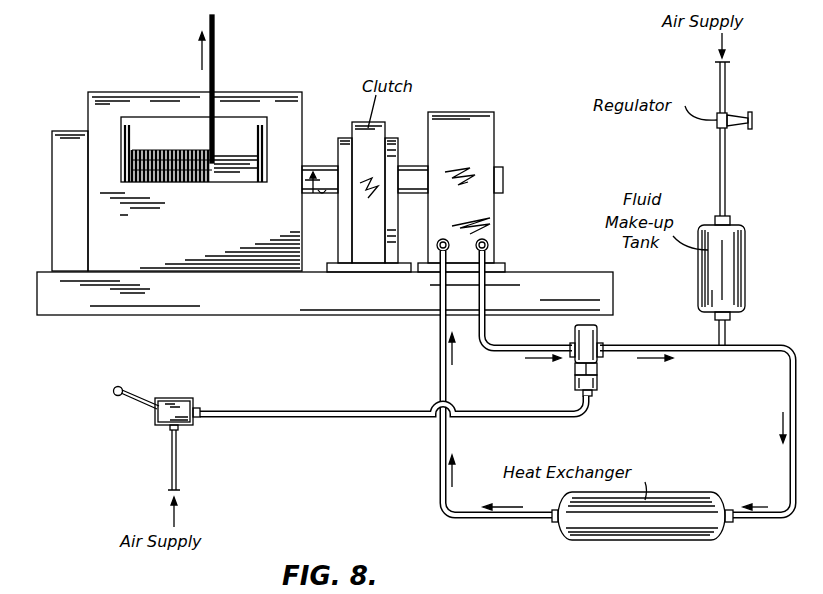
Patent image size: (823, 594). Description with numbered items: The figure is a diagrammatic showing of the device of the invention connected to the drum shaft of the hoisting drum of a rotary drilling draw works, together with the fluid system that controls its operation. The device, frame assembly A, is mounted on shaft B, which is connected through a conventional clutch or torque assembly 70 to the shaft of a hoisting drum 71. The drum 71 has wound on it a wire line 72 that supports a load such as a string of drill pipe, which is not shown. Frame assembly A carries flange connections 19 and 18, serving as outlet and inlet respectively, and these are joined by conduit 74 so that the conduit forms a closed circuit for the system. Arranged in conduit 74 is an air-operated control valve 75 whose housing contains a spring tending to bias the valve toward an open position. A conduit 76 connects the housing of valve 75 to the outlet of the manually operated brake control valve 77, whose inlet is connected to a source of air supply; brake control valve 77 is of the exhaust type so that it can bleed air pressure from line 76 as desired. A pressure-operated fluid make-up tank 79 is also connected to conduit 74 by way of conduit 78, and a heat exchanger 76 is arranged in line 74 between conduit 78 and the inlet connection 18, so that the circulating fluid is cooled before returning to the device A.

The flange connection 18 is at (437, 243).
The flange connection 19 is at (488, 243).
The clutch assembly 70 is at (357, 136).
The hoisting drum 71 is at (238, 174).
The wire line 72 is at (215, 72).
The conduit 74 is at (439, 357).
The air-operated control valve 75 is at (598, 355).
The heat exchanger 76 is at (318, 410).
The brake control valve 77 is at (180, 407).
The conduit 78 is at (727, 337).
The fluid make-up tank 79 is at (730, 278).
The frame assembly A is at (470, 126).
The shaft B is at (414, 164).